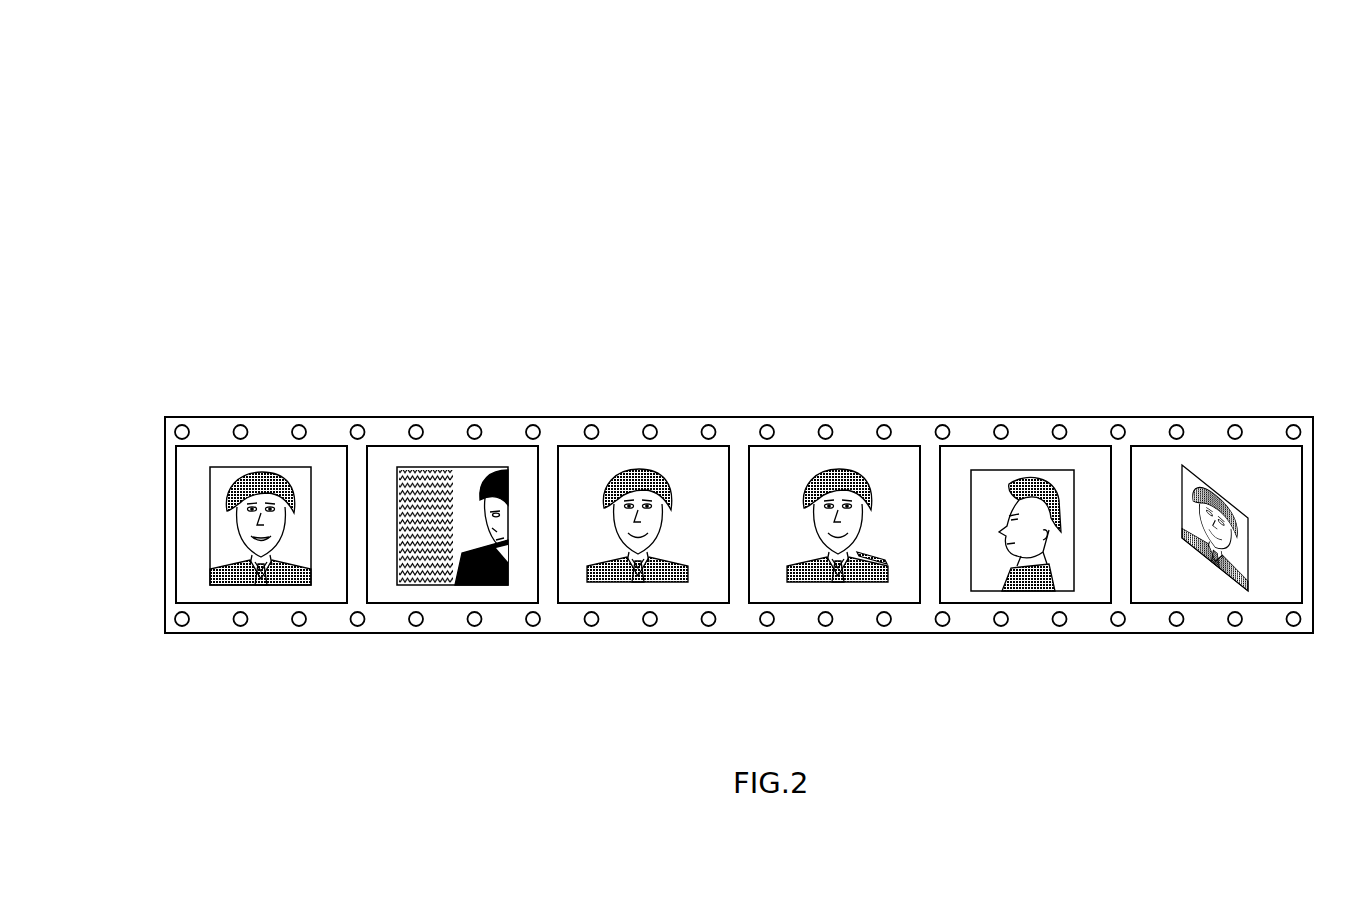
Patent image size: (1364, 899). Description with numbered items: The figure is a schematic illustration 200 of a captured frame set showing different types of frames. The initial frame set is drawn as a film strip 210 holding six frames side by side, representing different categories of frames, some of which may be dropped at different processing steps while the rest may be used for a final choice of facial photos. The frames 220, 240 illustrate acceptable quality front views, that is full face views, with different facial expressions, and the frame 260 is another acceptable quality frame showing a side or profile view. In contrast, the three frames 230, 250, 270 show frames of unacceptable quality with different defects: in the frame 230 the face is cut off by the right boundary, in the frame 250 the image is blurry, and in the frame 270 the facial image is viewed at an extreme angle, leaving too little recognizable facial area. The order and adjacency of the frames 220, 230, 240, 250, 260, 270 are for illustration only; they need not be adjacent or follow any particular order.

The schematic illustration 200 is at (1322, 97).
The film strip 210 is at (198, 413).
The frame 220 is at (227, 588).
The frame 230 is at (458, 588).
The frame 240 is at (632, 588).
The frame 250 is at (820, 588).
The frame 260 is at (1035, 588).
The frame 270 is at (1214, 588).